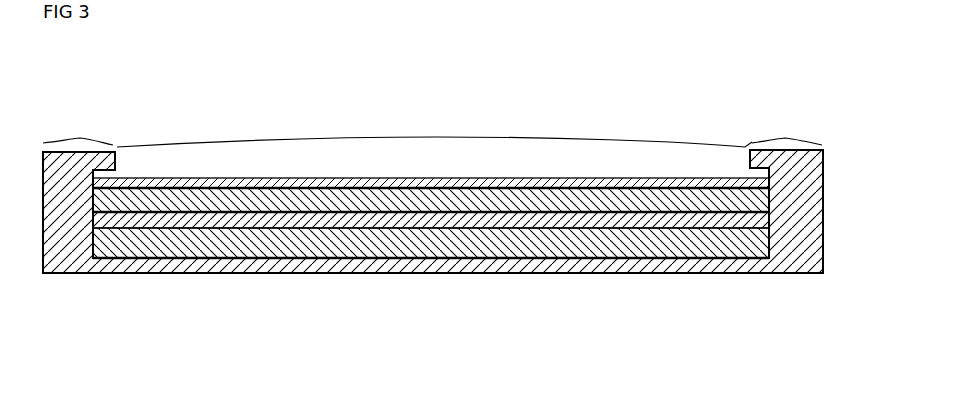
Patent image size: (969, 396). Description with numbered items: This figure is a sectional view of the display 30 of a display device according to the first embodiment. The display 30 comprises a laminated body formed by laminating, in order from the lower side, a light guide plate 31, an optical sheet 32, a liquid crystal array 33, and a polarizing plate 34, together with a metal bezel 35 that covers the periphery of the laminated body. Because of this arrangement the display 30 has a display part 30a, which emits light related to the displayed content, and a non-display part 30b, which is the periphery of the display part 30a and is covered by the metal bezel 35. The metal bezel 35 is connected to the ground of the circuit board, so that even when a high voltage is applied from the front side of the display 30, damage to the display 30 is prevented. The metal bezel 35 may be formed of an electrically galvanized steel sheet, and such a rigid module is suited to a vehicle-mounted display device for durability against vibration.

The display 30 is at (676, 94).
The display part 30a is at (434, 131).
The non-display part 30b is at (432, 129).
The light guide plate 31 is at (340, 260).
The optical sheet 32 is at (422, 228).
The liquid crystal array 33 is at (483, 213).
The polarizing plate 34 is at (548, 190).
The metal bezel 35 is at (823, 190).